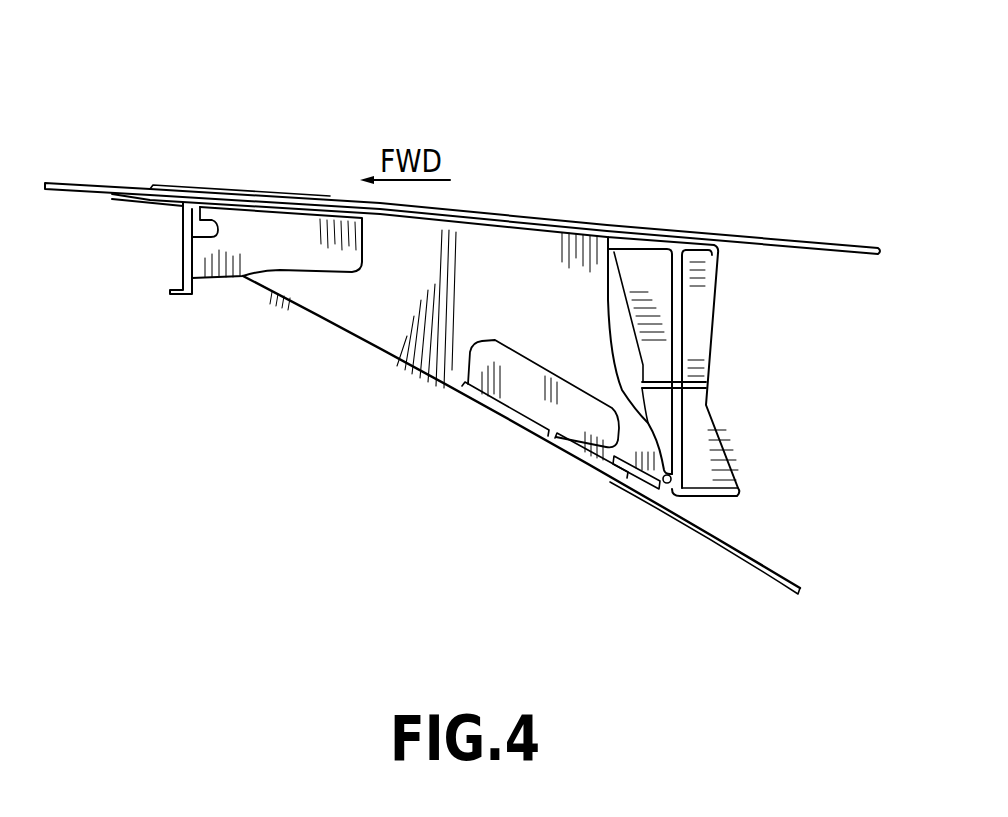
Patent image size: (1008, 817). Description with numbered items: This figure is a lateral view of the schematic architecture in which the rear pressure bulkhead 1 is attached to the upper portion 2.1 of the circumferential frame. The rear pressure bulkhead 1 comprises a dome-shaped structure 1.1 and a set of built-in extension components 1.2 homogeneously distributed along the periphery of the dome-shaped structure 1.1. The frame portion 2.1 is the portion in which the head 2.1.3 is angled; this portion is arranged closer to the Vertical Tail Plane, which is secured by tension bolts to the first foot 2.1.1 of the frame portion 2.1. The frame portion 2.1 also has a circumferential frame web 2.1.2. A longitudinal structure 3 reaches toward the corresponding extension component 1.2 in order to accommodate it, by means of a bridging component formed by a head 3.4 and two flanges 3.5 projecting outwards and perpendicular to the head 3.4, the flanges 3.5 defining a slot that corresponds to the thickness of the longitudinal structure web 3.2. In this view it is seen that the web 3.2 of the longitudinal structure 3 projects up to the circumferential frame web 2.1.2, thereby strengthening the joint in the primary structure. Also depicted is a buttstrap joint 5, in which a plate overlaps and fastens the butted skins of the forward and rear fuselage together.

The buttstrap joint 5 is at (120, 155).
The longitudinal structure web 3.2 is at (553, 237).
The longitudinal structure 3 is at (390, 316).
The rear pressure bulkhead 1 is at (750, 606).
The dome-shaped structure 1.1 is at (707, 527).
The extension component 1.2 is at (585, 455).
The flange 3.5 is at (466, 392).
The head 3.4 is at (520, 418).
The portion of the circumferential frame 2.1 is at (760, 399).
The first foot 2.1.1 is at (718, 246).
The circumferential frame web 2.1.2 is at (702, 351).
The head 2.1.3 is at (645, 485).